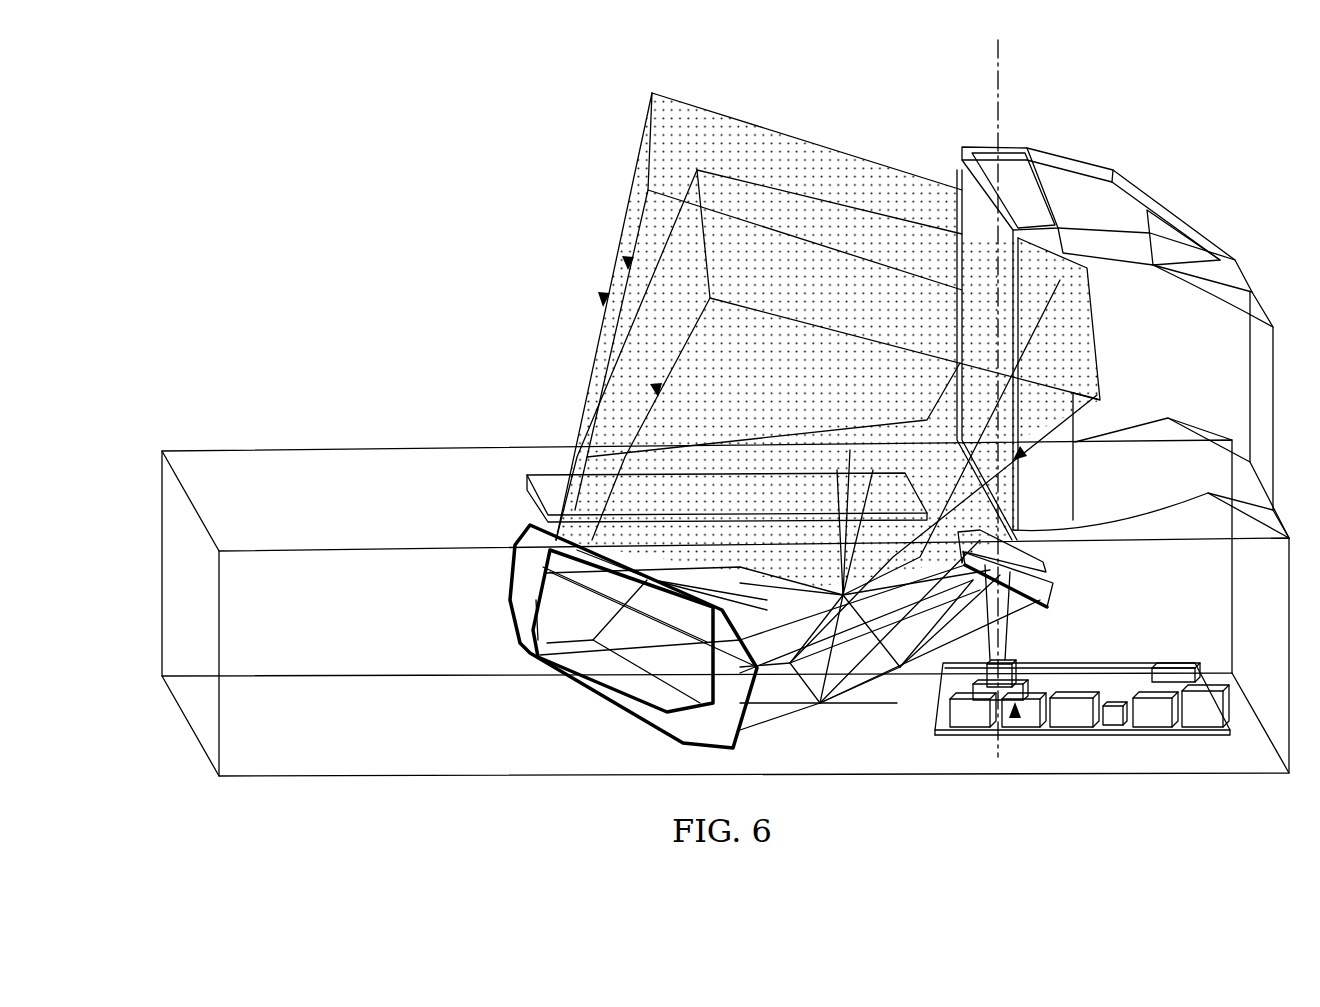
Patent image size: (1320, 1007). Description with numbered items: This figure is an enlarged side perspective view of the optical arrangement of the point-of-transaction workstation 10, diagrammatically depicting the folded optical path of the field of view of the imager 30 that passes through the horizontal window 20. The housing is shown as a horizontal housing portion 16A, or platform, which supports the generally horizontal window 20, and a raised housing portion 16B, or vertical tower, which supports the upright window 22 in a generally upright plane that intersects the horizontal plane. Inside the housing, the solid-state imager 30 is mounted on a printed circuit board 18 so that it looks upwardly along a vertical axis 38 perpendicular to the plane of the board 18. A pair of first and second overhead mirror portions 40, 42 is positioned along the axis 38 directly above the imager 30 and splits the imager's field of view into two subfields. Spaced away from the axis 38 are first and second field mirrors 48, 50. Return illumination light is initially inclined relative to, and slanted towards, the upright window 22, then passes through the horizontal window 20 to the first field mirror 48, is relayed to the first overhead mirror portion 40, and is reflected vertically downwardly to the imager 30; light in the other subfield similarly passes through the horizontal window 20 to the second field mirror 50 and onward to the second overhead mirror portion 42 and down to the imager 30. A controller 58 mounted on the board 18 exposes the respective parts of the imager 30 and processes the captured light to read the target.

The point-of-transaction workstation 10 is at (468, 243).
The horizontal housing portion 16A is at (212, 463).
The raised housing portion 16B is at (1040, 148).
The printed circuit board 18 is at (925, 710).
The horizontal window 20 is at (555, 478).
The upright window 22 is at (973, 270).
The imager 30 is at (1015, 718).
The vertical axis 38 is at (1000, 64).
The first overhead mirror portion 40 is at (1050, 597).
The second overhead mirror portion 42 is at (1043, 562).
The first field mirror 48 is at (515, 580).
The second field mirror 50 is at (617, 695).
The controller 58 is at (1040, 663).